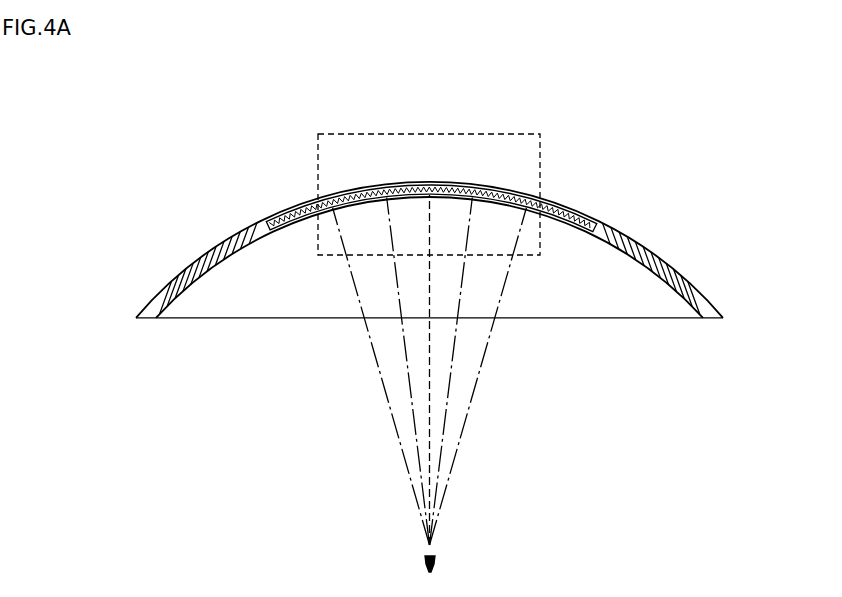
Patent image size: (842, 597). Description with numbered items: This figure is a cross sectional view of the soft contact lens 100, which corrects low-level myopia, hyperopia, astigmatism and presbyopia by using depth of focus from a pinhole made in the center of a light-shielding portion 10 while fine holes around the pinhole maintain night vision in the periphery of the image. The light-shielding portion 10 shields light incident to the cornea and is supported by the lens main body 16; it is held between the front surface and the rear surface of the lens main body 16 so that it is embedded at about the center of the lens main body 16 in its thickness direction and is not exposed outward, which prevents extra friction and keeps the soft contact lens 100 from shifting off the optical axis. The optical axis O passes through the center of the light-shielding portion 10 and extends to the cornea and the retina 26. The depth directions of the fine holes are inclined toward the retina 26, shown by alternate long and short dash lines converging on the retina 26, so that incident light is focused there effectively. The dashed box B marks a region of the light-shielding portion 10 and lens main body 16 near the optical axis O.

The soft contact lens 100 is at (203, 169).
The lens main body 16 is at (672, 258).
The light-shielding portion 10 is at (567, 200).
The enlarged region B is at (429, 133).
The optical axis O is at (432, 158).
The retina 26 is at (437, 563).